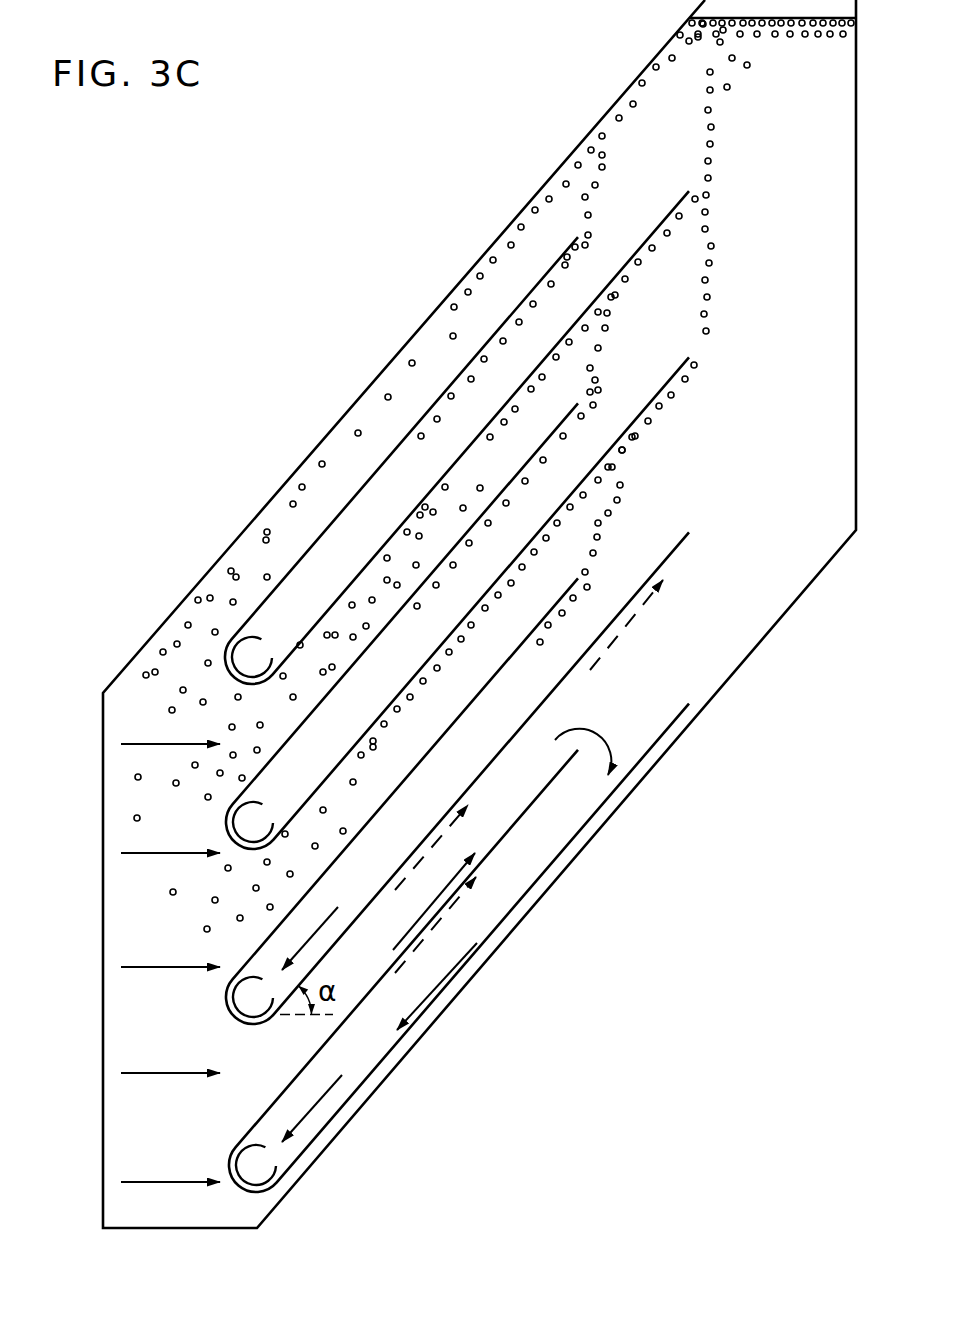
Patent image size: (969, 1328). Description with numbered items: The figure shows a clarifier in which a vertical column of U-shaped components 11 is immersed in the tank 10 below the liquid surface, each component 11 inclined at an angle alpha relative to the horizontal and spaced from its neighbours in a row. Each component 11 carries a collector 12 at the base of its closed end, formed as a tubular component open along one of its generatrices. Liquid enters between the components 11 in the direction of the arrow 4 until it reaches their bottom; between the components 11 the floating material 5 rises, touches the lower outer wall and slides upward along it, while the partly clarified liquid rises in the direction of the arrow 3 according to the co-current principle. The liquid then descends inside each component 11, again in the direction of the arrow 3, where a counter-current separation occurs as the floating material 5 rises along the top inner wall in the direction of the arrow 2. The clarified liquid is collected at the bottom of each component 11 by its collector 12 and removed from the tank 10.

The arrow 2 is at (520, 793).
The arrow 3 is at (446, 935).
The arrow 4 is at (170, 948).
The floating material 5 is at (176, 786).
The tank 10 is at (260, 510).
The U-shaped component 11 is at (270, 1021).
The collector 12 is at (253, 1144).